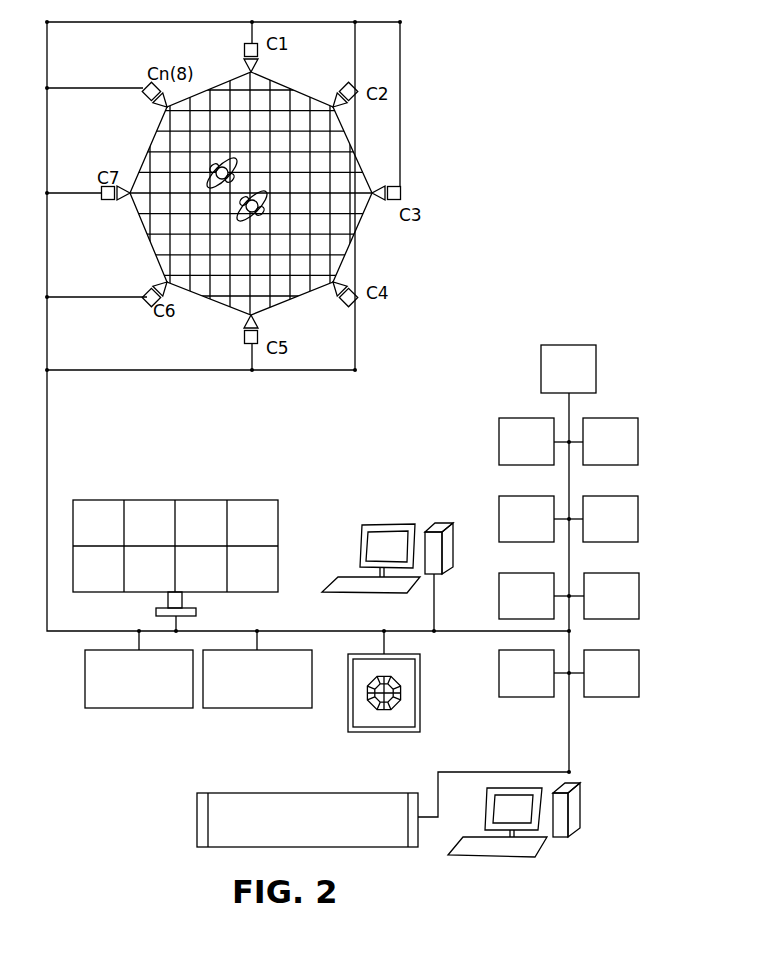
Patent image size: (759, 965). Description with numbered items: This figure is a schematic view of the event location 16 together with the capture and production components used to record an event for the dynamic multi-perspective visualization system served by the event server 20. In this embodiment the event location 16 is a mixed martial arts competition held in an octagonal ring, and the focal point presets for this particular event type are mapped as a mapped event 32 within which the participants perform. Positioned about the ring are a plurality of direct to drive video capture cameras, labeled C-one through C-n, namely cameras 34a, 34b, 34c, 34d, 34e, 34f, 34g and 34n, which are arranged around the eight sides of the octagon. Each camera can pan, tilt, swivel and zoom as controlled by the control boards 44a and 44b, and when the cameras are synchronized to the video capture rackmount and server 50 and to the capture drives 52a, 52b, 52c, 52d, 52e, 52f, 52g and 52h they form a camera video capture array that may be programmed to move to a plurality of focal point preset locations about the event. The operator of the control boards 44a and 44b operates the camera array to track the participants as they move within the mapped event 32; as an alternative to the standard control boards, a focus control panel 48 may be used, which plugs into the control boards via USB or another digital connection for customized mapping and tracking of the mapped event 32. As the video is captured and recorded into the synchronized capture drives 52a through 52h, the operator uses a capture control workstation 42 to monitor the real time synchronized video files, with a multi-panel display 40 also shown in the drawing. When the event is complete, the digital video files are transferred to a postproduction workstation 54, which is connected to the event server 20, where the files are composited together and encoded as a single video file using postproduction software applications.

The event location 16 is at (518, 263).
The event server 20 is at (257, 793).
The mapped event 32 is at (292, 195).
The video capture camera 34a is at (245, 50).
The video capture camera 34b is at (346, 84).
The video capture camera 34c is at (401, 188).
The video capture camera 34d is at (358, 288).
The video capture camera 34e is at (244, 338).
The video capture camera 34f is at (146, 291).
The video capture camera 34g is at (107, 200).
The video capture camera 34n is at (143, 96).
The multi-panel display 40 is at (278, 500).
The capture control workstation 42 is at (441, 524).
The control board 44a is at (90, 708).
The control board 44b is at (205, 708).
The focus control panel 48 is at (47, 432).
The video capture rackmount and server 50 is at (596, 345).
The capture drive 52a is at (500, 420).
The capture drive 52b is at (638, 418).
The capture drive 52c is at (506, 542).
The capture drive 52d is at (638, 496).
The capture drive 52e is at (499, 596).
The capture drive 52f is at (639, 573).
The capture drive 52g is at (499, 673).
The capture drive 52h is at (639, 650).
The postproduction workstation 54 is at (580, 823).